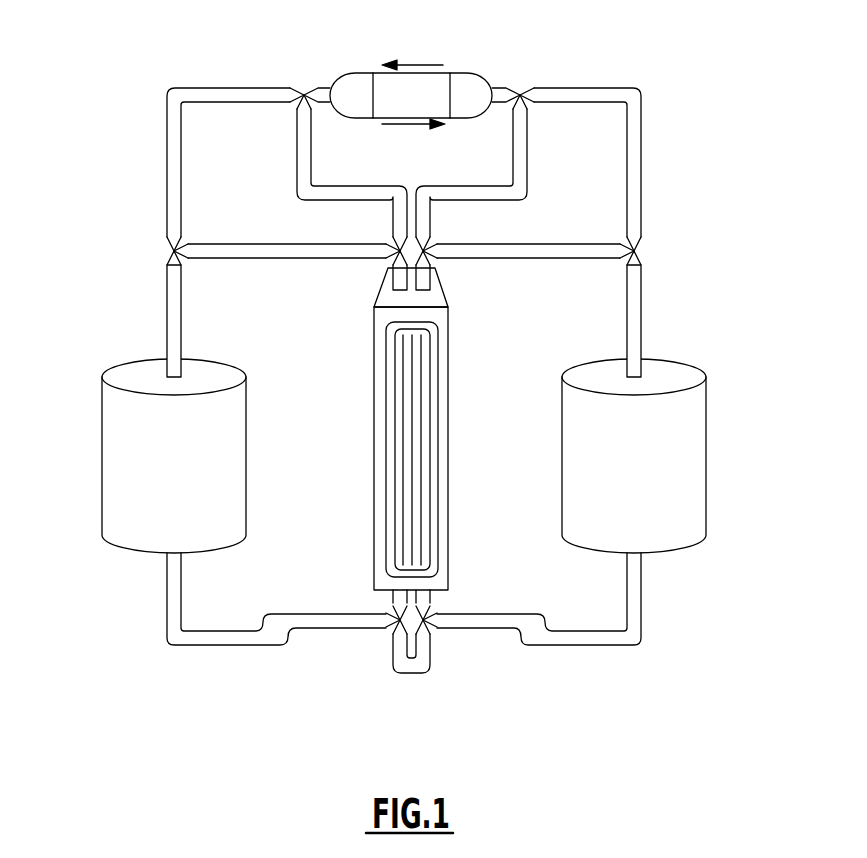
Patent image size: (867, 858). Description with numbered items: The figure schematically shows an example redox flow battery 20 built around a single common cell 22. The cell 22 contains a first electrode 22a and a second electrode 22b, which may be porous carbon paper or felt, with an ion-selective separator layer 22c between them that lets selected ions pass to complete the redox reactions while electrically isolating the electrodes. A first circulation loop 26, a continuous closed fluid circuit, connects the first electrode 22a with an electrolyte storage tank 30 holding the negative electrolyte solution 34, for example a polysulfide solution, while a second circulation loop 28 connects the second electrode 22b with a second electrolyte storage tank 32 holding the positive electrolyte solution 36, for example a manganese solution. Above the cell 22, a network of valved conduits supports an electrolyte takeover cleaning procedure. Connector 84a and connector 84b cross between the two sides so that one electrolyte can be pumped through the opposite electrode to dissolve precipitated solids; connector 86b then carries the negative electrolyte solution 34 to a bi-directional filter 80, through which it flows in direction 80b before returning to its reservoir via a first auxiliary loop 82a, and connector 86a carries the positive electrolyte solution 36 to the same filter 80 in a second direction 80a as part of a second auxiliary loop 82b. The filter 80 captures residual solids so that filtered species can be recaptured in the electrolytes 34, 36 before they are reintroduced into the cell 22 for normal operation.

The redox flow battery 20 is at (133, 702).
The cell 22 is at (405, 420).
The first electrode 22a is at (400, 403).
The second electrode 22b is at (418, 425).
The ion-selective separator layer 22c is at (412, 340).
The first circulation loop 26 is at (167, 307).
The second circulation loop 28 is at (641, 318).
The electrolyte storage tank 30 is at (102, 522).
The electrolyte storage tank 32 is at (706, 512).
The negative electrolyte solution 34 is at (112, 442).
The positive electrolyte solution 36 is at (706, 462).
The bi-directional filter 80 is at (432, 73).
The second direction 80a is at (405, 128).
The direction 80b is at (413, 62).
The first auxiliary loop 82a is at (232, 88).
The second auxiliary loop 82b is at (587, 88).
The connector 84a is at (280, 244).
The second bypass conduit with valve 84b is at (547, 244).
The connector 86a is at (297, 165).
The connector 86b is at (527, 147).